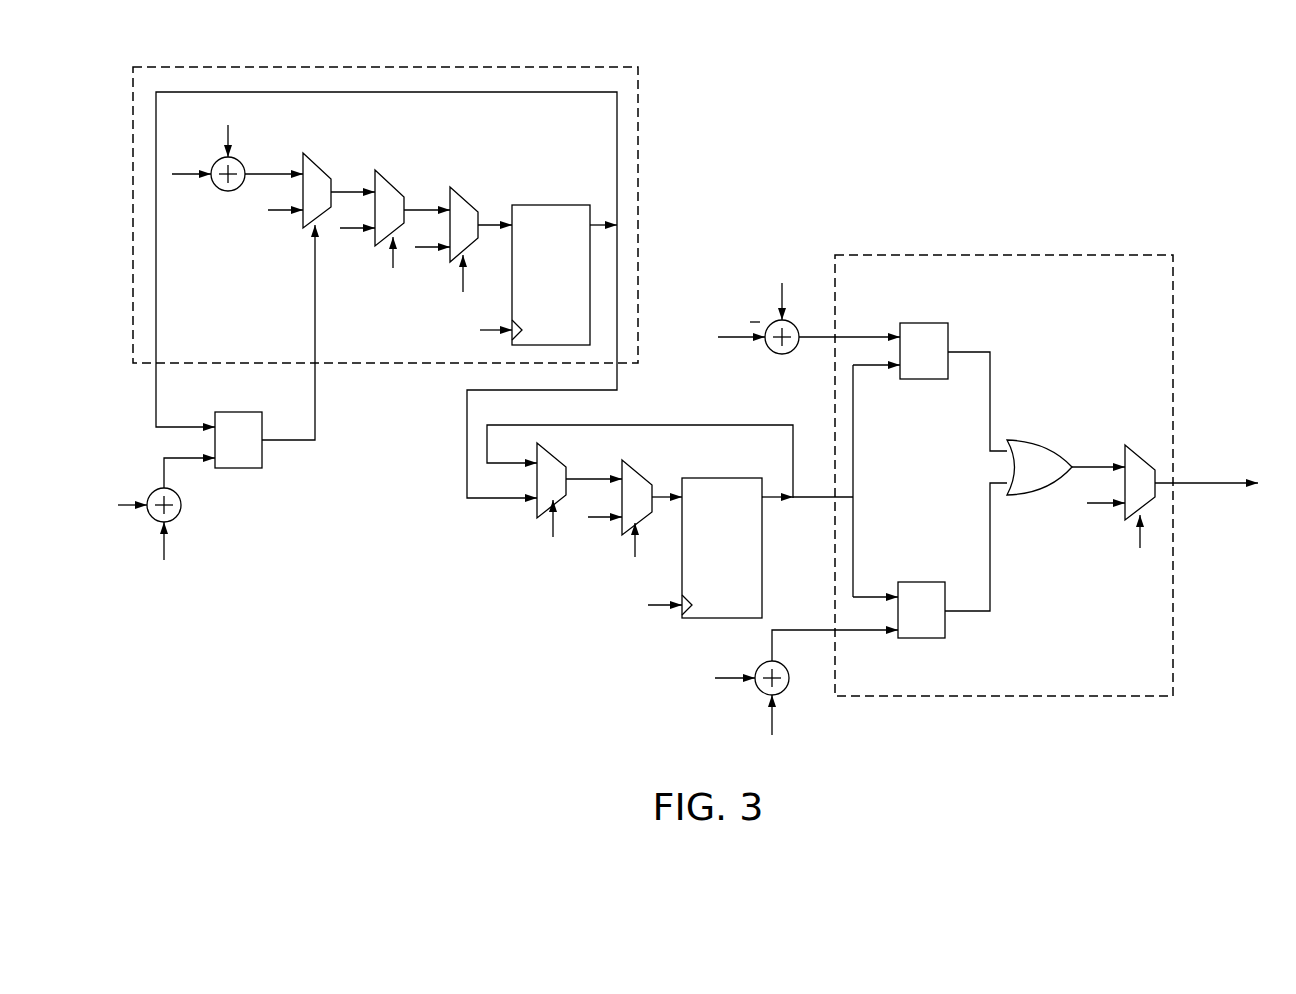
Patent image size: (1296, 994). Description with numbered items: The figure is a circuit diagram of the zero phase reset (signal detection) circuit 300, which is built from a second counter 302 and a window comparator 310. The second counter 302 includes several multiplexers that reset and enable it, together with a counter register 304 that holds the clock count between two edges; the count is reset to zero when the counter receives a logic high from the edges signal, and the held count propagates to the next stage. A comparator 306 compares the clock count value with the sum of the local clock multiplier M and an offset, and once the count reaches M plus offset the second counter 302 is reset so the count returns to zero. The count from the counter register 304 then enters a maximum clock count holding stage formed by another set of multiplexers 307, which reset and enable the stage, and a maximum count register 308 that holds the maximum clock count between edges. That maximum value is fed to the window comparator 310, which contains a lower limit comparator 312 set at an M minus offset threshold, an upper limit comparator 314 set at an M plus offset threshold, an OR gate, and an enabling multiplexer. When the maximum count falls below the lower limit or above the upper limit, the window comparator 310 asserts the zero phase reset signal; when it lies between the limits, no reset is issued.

The zero-crossing period reset circuit 300 is at (1050, 112).
The second counter 302 is at (640, 158).
The counter register 304 is at (553, 204).
The comparator 306 is at (267, 423).
The set of multiplexers 307 is at (497, 580).
The maximum count register 308 is at (712, 478).
The window comparator 310 is at (1027, 255).
The lower limit comparator 312 is at (863, 330).
The upper limit comparator 314 is at (853, 634).